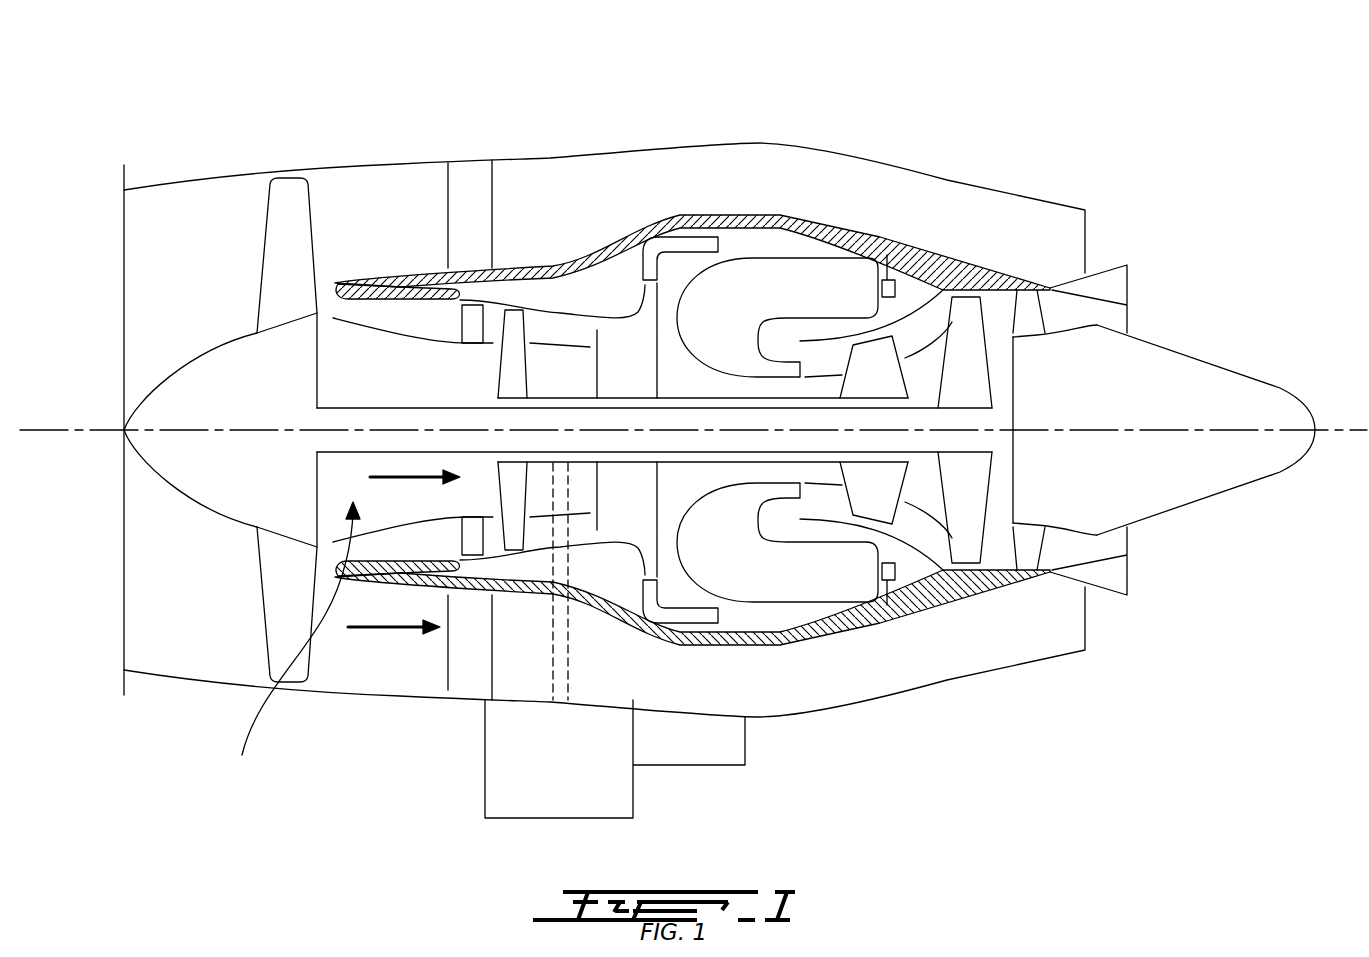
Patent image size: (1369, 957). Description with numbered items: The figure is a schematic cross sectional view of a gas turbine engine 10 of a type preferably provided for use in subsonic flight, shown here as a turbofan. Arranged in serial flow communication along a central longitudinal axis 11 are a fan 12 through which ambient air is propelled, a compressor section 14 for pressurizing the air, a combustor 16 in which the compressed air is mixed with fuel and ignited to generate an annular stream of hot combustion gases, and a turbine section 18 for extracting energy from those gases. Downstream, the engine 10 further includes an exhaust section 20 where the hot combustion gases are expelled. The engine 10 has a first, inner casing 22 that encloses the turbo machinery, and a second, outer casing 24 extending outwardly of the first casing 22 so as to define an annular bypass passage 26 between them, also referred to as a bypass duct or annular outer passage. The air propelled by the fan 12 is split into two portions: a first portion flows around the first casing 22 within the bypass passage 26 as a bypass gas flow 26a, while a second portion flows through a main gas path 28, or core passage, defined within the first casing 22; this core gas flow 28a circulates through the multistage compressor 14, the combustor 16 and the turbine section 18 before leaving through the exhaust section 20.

The gas turbine engine 10 is at (893, 141).
The central longitudinal axis 11 is at (1352, 430).
The fan 12 is at (282, 593).
The compressor section 14 is at (550, 323).
The combustor 16 is at (780, 280).
The turbine section 18 is at (920, 500).
The exhaust section 20 is at (1090, 554).
The first, inner casing 22 is at (783, 645).
The second, outer casing 24 is at (373, 690).
The annular bypass passage 26 is at (855, 668).
The bypass gas flow 26a is at (398, 632).
The main gas path 28 is at (291, 646).
The core gas flow 28a is at (408, 473).